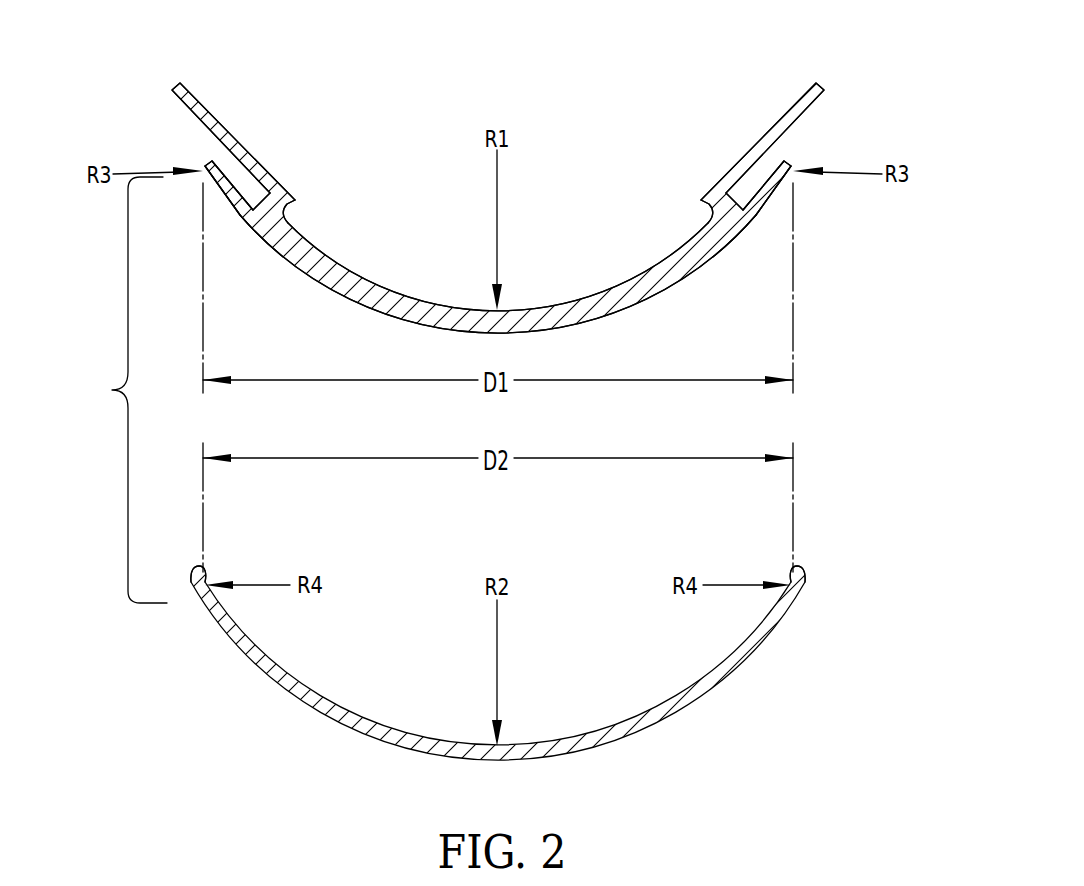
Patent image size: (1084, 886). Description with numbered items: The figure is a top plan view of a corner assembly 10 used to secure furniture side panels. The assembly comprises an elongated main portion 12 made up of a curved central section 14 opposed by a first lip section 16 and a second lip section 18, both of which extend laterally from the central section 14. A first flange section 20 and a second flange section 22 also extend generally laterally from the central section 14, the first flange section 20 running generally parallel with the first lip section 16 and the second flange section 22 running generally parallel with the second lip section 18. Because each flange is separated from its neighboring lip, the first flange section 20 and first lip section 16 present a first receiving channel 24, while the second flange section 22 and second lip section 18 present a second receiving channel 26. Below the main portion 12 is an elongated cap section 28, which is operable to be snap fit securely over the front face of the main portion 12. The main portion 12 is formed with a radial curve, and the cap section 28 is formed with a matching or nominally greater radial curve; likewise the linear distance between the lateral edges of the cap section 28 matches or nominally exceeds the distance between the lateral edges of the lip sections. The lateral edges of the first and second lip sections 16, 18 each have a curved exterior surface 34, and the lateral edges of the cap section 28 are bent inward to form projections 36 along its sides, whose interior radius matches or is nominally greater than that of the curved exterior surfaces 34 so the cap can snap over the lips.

The corner assembly 10 is at (125, 390).
The elongated main portion 12 is at (405, 64).
The central section 14 is at (410, 300).
The first lip section 16 is at (240, 216).
The second lip section 18 is at (756, 216).
The first flange section 20 is at (217, 119).
The second flange section 22 is at (779, 119).
The first receiving channel 24 is at (238, 176).
The second receiving channel 26 is at (758, 176).
The elongated cap section 28 is at (610, 745).
The curved exterior surface 34 is at (206, 165).
The projections 36 is at (198, 567).